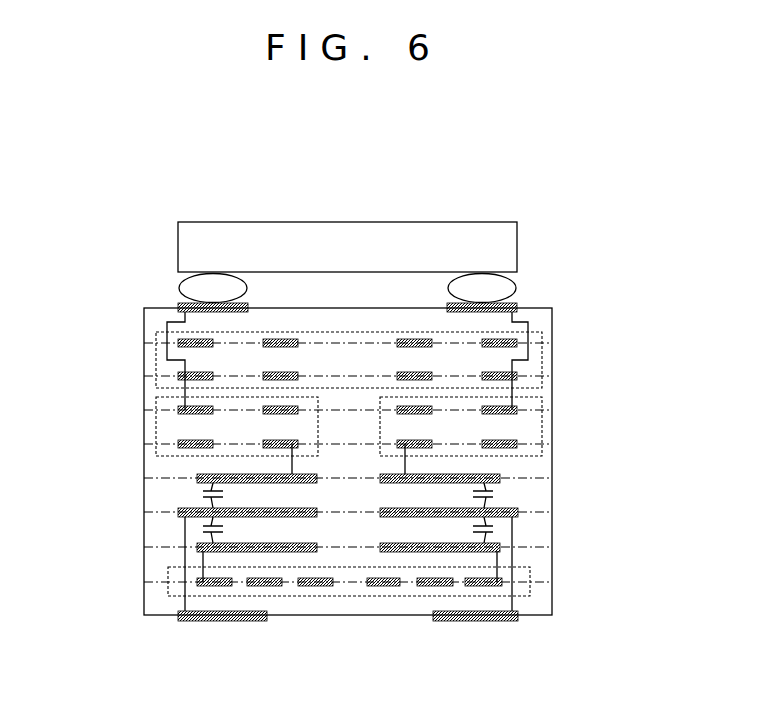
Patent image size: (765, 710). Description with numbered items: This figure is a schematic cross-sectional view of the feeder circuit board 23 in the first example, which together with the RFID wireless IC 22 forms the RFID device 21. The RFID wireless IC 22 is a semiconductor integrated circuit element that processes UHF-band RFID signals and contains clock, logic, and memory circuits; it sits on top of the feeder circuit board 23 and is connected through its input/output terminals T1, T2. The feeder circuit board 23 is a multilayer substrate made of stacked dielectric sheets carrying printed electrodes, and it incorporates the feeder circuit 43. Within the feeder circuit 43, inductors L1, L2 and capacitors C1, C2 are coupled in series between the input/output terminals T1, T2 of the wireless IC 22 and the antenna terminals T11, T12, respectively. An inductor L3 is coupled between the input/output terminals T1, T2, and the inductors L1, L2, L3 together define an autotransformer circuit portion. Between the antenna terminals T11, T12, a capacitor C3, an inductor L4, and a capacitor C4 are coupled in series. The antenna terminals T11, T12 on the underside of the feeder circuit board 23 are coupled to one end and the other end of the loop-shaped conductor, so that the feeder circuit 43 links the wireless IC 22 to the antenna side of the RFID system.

The RFID device 21 is at (146, 164).
The RFID wireless IC 22 is at (445, 222).
The feeder circuit board 23 is at (555, 318).
The feeder circuit 43 is at (141, 340).
The input/output terminal T1 is at (192, 289).
The input/output terminal T2 is at (502, 289).
The antenna terminal T11 is at (210, 593).
The antenna terminal T12 is at (490, 593).
The inductor L1 is at (142, 425).
The inductor L2 is at (545, 427).
The inductor L3 is at (545, 357).
The inductor L4 is at (168, 577).
The capacitor C1 is at (197, 495).
The capacitor C2 is at (500, 494).
The capacitor C3 is at (197, 531).
The capacitor C4 is at (500, 529).